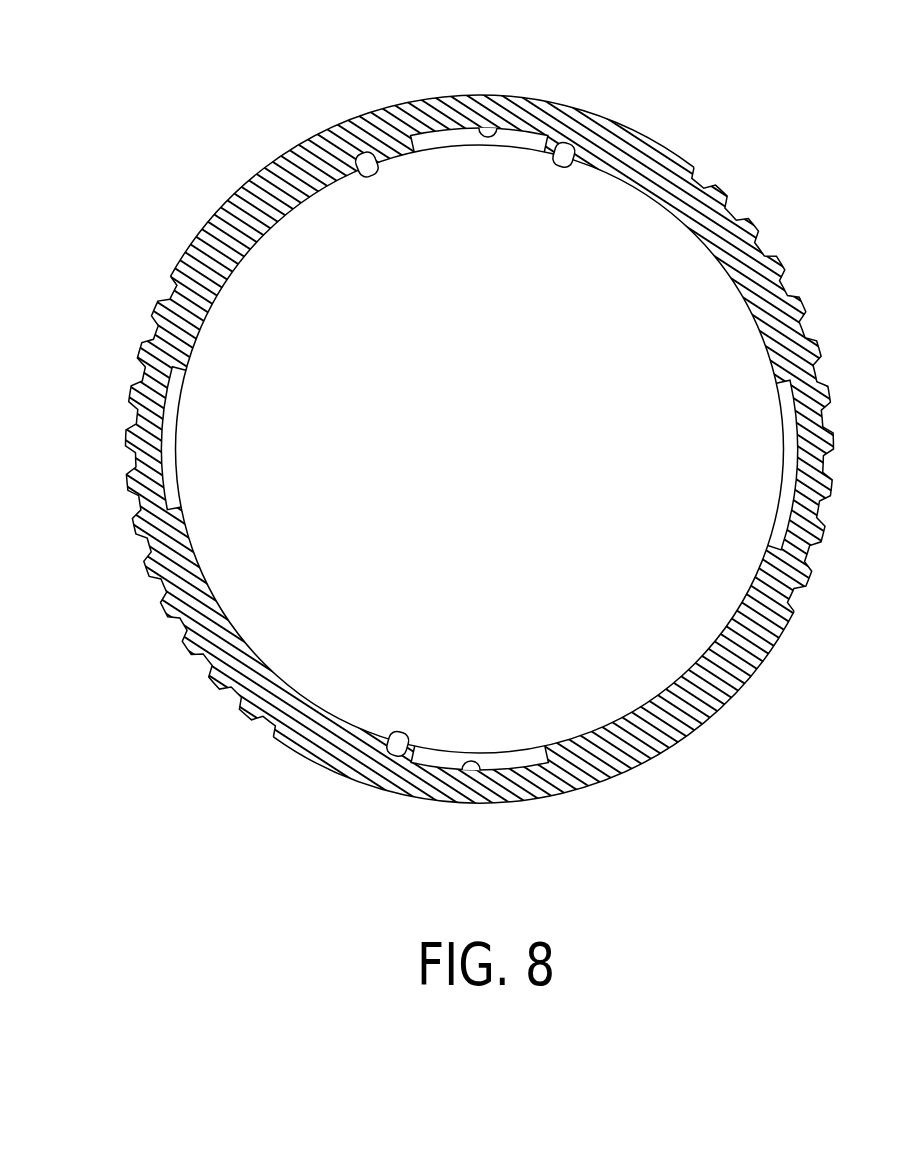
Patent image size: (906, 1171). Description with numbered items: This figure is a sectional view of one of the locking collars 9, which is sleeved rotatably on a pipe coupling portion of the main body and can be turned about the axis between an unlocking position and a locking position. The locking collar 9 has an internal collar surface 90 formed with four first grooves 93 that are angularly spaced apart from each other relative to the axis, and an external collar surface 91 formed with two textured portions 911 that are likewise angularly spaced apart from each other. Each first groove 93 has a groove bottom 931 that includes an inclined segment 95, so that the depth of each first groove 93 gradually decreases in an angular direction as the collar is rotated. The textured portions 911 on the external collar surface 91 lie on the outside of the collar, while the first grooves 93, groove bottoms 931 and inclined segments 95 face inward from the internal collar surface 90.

The locking collar 9 is at (435, 460).
The internal collar surface 90 is at (334, 169).
The external collar surface 91 is at (233, 197).
The textured portion 911 is at (138, 526).
The first groove 93 is at (440, 142).
The groove bottom 931 is at (497, 126).
The inclined segment 95 is at (577, 158).